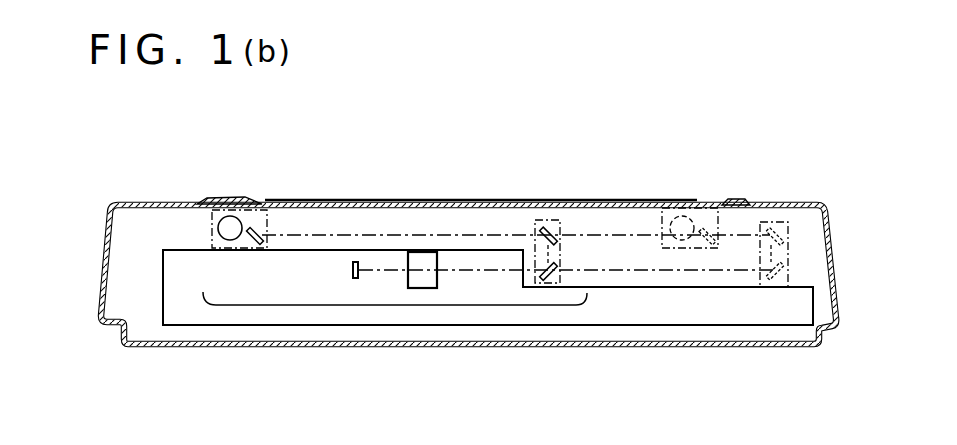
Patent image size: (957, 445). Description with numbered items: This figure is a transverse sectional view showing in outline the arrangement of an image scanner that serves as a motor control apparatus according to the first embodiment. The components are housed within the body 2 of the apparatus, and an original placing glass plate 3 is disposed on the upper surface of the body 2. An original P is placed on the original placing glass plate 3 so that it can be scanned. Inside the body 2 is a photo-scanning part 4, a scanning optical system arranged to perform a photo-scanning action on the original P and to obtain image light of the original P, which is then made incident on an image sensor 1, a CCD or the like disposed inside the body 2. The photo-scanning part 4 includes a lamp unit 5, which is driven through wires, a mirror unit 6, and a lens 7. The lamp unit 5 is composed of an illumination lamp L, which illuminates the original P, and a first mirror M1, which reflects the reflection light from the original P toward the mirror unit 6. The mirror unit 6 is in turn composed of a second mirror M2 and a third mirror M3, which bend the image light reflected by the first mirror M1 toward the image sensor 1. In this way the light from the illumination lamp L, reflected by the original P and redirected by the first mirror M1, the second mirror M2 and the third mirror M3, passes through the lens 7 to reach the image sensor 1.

The image sensor 1 is at (357, 261).
The body 2 is at (789, 203).
The original placing glass plate 3 is at (636, 200).
The photo-scanning part 4 is at (385, 307).
The lamp unit 5 is at (212, 215).
The mirror unit 6 is at (563, 232).
The lens 7 is at (428, 290).
The illumination lamp L is at (203, 216).
The first mirror M1 is at (250, 225).
The second mirror M2 is at (546, 227).
The third mirror M3 is at (553, 283).
The original P is at (680, 207).